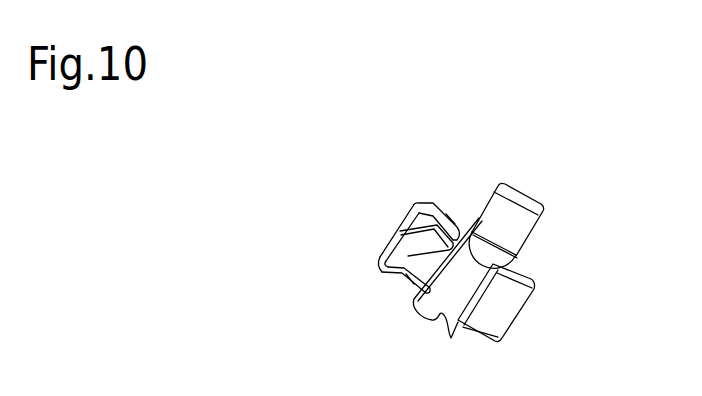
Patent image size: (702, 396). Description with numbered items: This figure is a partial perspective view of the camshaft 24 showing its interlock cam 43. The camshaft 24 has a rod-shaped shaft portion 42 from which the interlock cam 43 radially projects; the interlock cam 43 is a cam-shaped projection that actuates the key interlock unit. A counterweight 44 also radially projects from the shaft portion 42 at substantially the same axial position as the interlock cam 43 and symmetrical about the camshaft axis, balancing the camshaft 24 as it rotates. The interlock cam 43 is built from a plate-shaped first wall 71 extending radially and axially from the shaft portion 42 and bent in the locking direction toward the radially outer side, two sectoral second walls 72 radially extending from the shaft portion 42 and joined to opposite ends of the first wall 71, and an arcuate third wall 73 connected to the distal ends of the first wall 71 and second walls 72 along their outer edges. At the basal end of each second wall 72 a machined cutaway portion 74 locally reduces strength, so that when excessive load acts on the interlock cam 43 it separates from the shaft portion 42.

The camshaft 24 is at (524, 188).
The shaft portion 42 is at (440, 313).
The interlock cam 43 is at (414, 204).
The counterweight 44 is at (530, 286).
The first wall 71 is at (421, 249).
The second walls 72 is at (400, 274).
The third wall 73 is at (382, 250).
The cutaway portion 74 is at (451, 229).